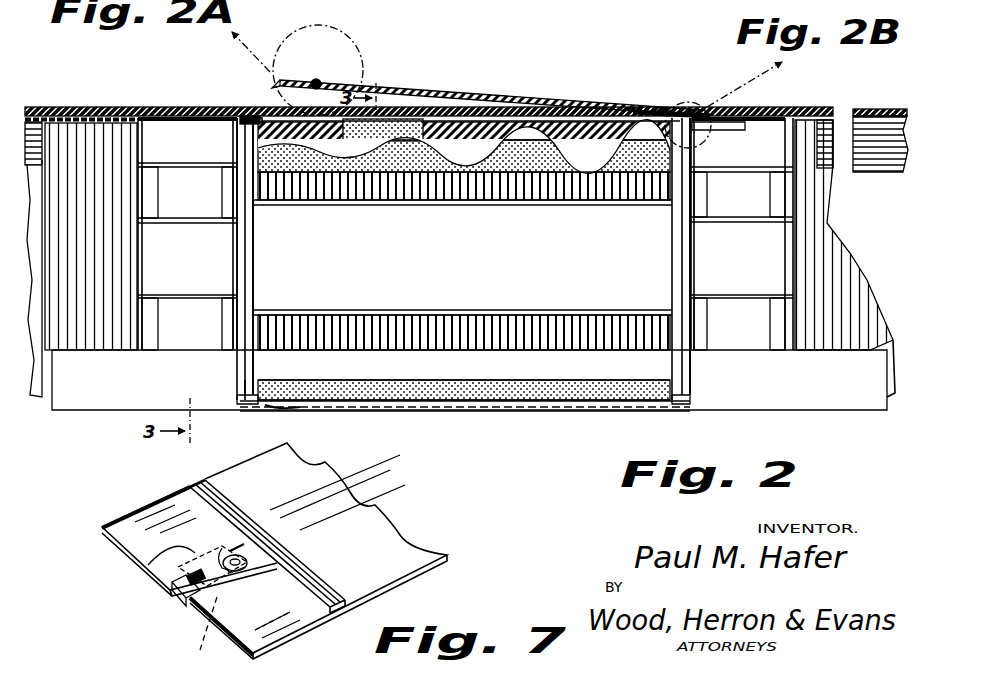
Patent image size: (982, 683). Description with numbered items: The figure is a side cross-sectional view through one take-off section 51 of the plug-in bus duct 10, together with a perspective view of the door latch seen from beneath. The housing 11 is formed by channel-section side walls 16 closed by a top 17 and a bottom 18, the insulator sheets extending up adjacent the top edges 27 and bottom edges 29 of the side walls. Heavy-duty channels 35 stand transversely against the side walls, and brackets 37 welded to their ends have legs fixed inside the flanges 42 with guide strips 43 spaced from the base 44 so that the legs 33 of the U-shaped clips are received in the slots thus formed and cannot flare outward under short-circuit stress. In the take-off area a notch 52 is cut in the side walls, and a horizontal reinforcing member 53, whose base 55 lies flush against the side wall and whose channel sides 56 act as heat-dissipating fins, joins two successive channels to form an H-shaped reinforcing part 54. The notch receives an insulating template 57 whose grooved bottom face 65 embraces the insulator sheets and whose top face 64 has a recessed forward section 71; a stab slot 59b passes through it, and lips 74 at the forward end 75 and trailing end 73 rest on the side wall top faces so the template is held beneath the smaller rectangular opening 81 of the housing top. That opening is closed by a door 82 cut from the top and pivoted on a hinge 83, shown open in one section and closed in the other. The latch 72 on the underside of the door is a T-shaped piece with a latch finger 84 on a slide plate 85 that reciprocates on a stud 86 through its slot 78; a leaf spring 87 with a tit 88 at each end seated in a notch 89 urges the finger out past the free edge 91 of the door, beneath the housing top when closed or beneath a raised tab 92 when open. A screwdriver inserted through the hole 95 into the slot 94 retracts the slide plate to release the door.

In FIG. 2, the plug-in bus duct 10 is at (62, 440).
In FIG. 2, the housing 11 is at (855, 285).
In FIG. 2, the side walls 16 is at (80, 318).
In FIG. 2, the top 17 is at (52, 104).
In FIG. 2, the bottom 18 is at (112, 412).
In FIG. 2, the top edges of side walls 27 is at (100, 106).
In FIG. 2, the bottom edges of side walls 29 is at (45, 408).
In FIG. 2, the legs 33 is at (186, 206).
In FIG. 2, the heavy-duty channel 35 is at (455, 259).
In FIG. 2, the bracket 37 is at (190, 135).
In FIG. 2, the flanges 42 is at (246, 250).
In FIG. 2, the guide strip 43 is at (152, 197).
In FIG. 2, the base 44 is at (250, 284).
In FIG. 2, the take-off section 51 is at (520, 432).
In FIG. 2, the notch 52 is at (510, 348).
In FIG. 2, the horizontal reinforcing member 53 is at (455, 272).
In FIG. 2, the H-shaped reinforcing part 54 is at (463, 300).
In FIG. 2, the base of horizontal reinforcing member 55 is at (455, 234).
In FIG. 2, the channel sides 56 is at (571, 310).
In FIG. 2, the template 57 is at (488, 127).
In FIG. 2, the stab slot 59b is at (400, 120).
In FIG. 2, the top face 64 is at (545, 140).
In FIG. 2, the bottom face 65 is at (393, 173).
In FIG. 2, the recessed forward section 71 is at (238, 128).
In FIG. 2, the latch 72 is at (312, 62).
In FIG. 7, the latch 72 is at (275, 533).
In FIG. 2, the trailing end 73 is at (690, 104).
In FIG. 2, the lip 74 is at (232, 400).
In FIG. 2, the forward end 75 is at (250, 115).
In FIG. 7, the slot 78 is at (223, 563).
In FIG. 2, the opening 81 is at (440, 108).
In FIG. 2, the door 82 is at (392, 82).
In FIG. 7, the door 82 is at (417, 546).
In FIG. 2, the hinge 83 is at (645, 110).
In FIG. 7, the latch finger 84 is at (185, 604).
In FIG. 7, the slide plate 85 is at (240, 547).
In FIG. 7, the stud 86 is at (240, 571).
In FIG. 7, the leaf spring 87 is at (307, 556).
In FIG. 7, the tit 88 is at (325, 612).
In FIG. 7, the notch 89 is at (190, 499).
In FIG. 7, the free edge 91 is at (118, 545).
In FIG. 2, the tab 92 is at (888, 110).
In FIG. 7, the slot 94 is at (187, 558).
In FIG. 7, the hole 95 is at (205, 632).